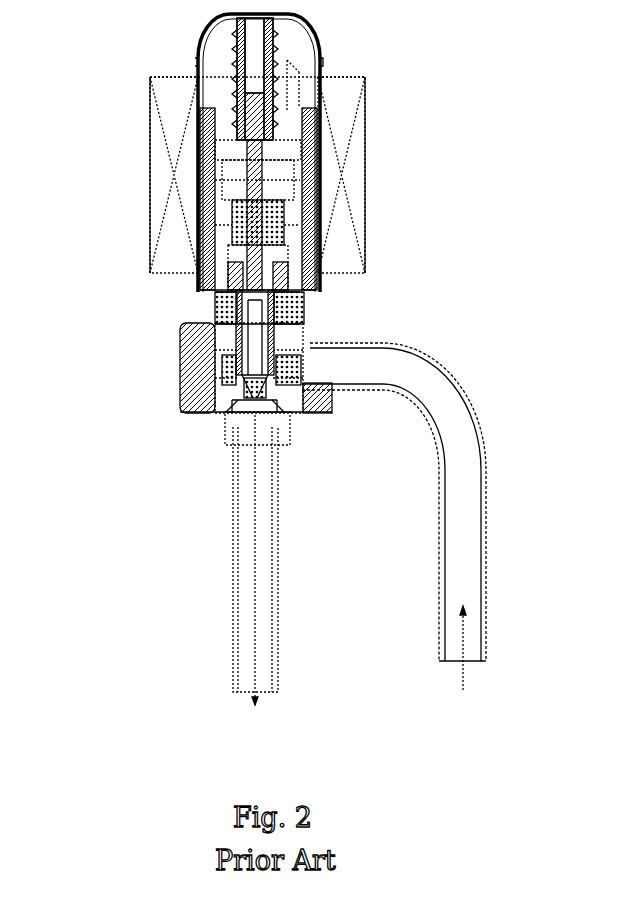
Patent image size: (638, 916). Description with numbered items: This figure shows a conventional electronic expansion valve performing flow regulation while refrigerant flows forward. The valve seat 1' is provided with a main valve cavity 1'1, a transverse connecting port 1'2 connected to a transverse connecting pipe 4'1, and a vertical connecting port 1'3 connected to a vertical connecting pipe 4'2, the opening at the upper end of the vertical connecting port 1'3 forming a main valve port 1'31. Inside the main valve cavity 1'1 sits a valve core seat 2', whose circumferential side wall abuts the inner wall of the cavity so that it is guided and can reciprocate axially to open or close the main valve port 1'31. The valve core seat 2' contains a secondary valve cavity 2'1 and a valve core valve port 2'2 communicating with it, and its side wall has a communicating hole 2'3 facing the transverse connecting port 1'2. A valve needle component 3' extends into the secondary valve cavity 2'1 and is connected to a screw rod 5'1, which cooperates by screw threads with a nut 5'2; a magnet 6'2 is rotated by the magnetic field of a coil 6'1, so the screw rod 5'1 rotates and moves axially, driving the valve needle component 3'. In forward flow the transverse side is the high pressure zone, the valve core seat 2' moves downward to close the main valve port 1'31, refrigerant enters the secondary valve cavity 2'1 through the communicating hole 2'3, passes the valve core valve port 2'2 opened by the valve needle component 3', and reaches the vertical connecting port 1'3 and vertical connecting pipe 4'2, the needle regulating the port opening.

The coil 6'1 is at (196, 153).
The magnet 6'2 is at (195, 183).
The screw rod 5'1 is at (168, 215).
The nut 5'2 is at (176, 261).
The valve needle component 3' is at (198, 307).
The valve seat 1' is at (201, 368).
The main valve cavity 1'1 is at (153, 368).
The transverse connecting port 1'2 is at (351, 423).
The main valve port 1'31 is at (223, 430).
The vertical connecting port 1'3 is at (206, 455).
The secondary valve cavity 2'1 is at (339, 324).
The valve core seat 2' is at (333, 355).
The communicating hole 2'3 is at (317, 377).
The valve core valve port 2'2 is at (316, 452).
The transverse connecting pipe 4'1 is at (438, 516).
The vertical connecting pipe 4'2 is at (201, 560).